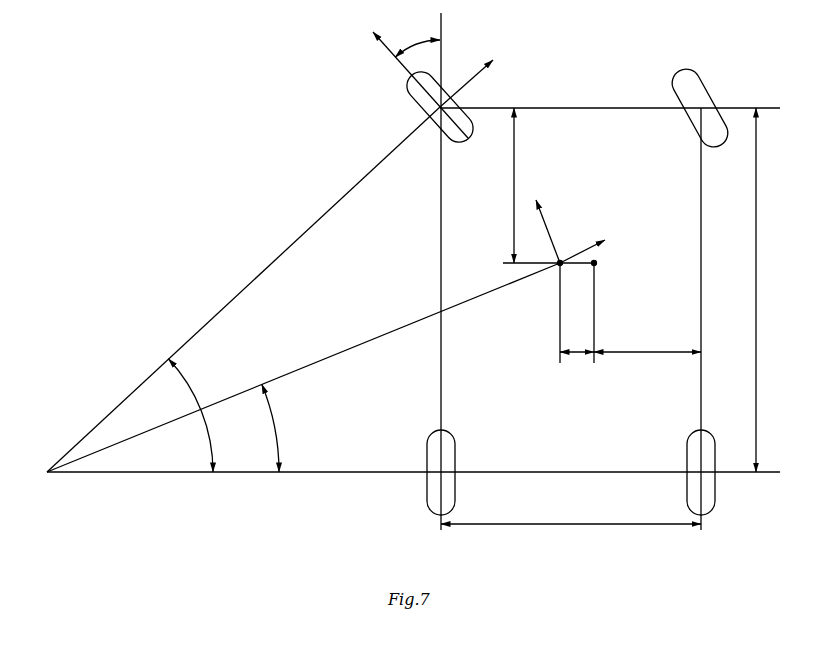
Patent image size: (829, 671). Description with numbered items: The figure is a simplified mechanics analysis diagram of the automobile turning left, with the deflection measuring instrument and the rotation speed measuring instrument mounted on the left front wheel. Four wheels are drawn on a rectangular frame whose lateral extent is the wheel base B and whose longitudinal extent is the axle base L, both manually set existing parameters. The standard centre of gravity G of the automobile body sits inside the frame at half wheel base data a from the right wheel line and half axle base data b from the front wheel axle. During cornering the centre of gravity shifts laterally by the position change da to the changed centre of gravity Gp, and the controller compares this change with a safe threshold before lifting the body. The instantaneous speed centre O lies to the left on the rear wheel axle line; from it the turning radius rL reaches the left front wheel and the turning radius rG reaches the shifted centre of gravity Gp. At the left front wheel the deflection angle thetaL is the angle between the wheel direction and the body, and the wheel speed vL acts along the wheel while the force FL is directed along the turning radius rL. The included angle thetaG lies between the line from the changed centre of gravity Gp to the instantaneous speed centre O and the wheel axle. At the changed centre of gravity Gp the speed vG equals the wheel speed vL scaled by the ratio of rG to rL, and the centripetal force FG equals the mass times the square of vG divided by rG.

The instantaneous speed centre O is at (39, 484).
The centre of gravity G is at (562, 262).
The centre of gravity after the change Gp is at (547, 281).
The turning radius of the left front wheel rL is at (243, 289).
The turning radius of the changed centre of gravity rG is at (303, 367).
The force at the left front wheel FL is at (478, 77).
The speed of the left front wheel vL is at (410, 85).
The centripetal force at the centre of gravity FG is at (594, 243).
The speed at the centre of gravity vG is at (559, 229).
The deflection angle of the wheel thetaL is at (304, 245).
The included angle of the changed centre of gravity thetaG is at (288, 428).
The half axle base data b is at (504, 185).
The half wheel base data a is at (647, 340).
The position change of the centre of gravity da is at (577, 340).
The axle base L is at (742, 290).
The wheel base B is at (571, 506).